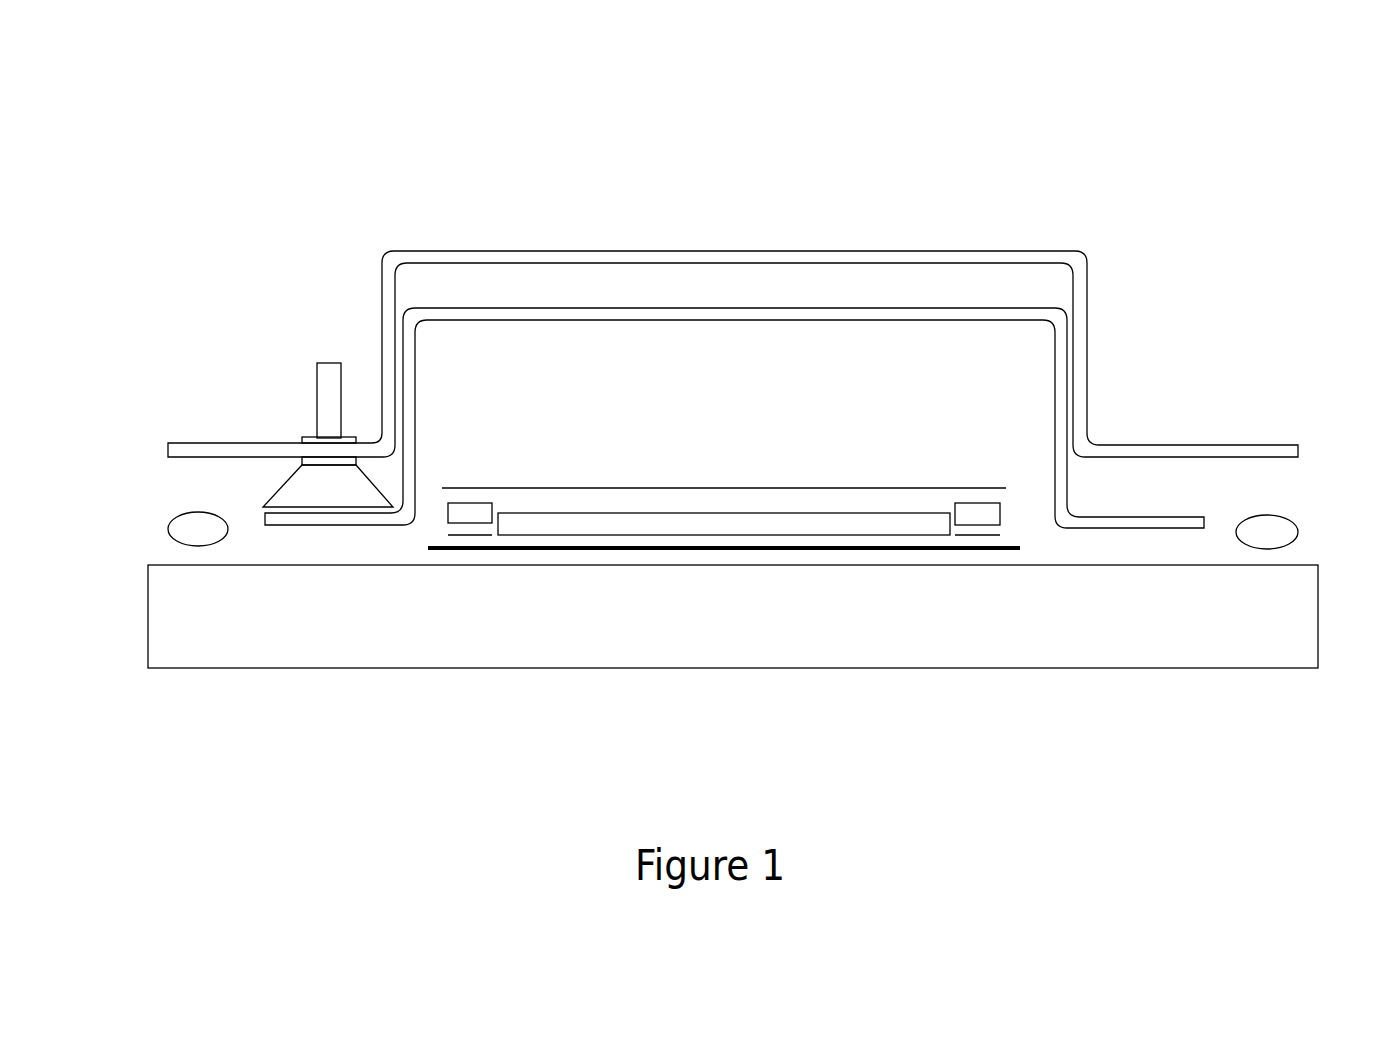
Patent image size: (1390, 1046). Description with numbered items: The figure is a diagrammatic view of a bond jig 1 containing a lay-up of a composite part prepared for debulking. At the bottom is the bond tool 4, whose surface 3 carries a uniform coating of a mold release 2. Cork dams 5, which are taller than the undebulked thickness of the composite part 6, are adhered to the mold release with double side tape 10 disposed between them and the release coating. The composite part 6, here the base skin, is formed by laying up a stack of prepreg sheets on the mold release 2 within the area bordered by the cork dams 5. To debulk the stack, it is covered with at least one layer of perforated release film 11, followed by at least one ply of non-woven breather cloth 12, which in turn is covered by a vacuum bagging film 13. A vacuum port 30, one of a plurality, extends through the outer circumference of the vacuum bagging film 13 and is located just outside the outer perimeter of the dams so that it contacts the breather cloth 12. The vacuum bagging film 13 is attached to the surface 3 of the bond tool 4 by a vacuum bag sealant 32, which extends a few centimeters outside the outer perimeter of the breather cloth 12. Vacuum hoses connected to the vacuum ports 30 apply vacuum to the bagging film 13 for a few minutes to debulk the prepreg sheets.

The bond jig 1 is at (1172, 118).
The mold release 2 is at (885, 548).
The surface 3 is at (1307, 567).
The bond tool 4 is at (1287, 628).
The cork dams 5 is at (972, 515).
The composite part 6 is at (735, 522).
The double side tape 10 is at (460, 535).
The perforated release film 11 is at (625, 488).
The non-woven breather cloth 12 is at (553, 308).
The vacuum bagging film 13 is at (418, 251).
The vacuum ports 30 is at (330, 362).
The vacuum bag sealant 32 is at (177, 517).